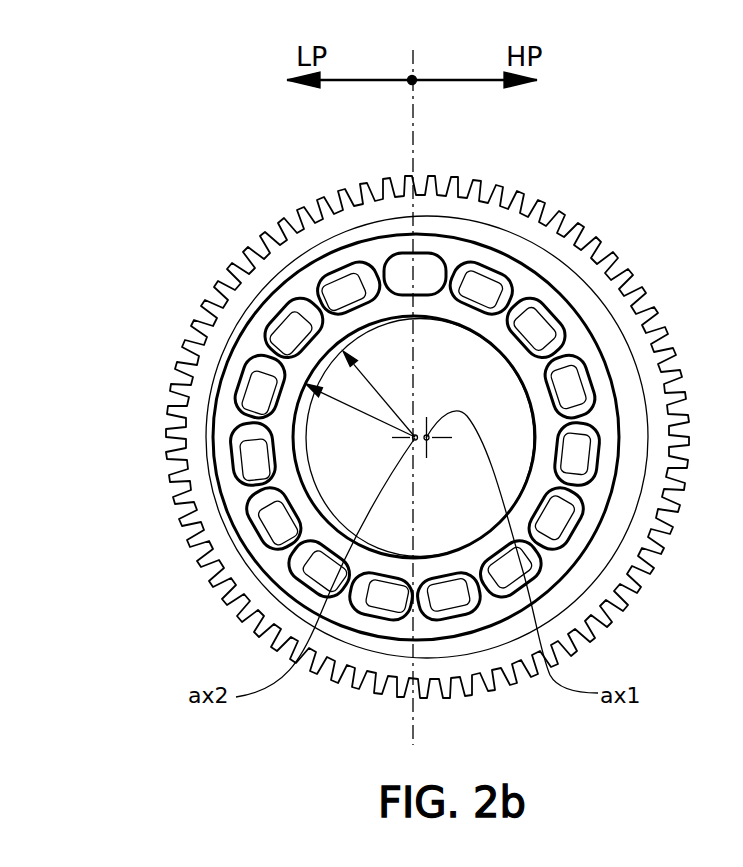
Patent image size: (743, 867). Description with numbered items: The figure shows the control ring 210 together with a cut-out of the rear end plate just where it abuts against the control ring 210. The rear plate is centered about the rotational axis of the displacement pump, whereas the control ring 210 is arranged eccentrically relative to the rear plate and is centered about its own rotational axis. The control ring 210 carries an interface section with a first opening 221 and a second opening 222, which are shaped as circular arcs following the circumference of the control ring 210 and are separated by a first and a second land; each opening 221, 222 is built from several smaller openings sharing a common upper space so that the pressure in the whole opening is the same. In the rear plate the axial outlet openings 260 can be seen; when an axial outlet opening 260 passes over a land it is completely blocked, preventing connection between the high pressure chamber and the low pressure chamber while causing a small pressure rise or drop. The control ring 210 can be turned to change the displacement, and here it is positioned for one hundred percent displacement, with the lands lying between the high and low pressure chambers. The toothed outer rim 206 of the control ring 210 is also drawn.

The gear teeth 206 is at (278, 222).
The control ring 210 is at (613, 192).
The first opening 221 is at (258, 384).
The second opening 222 is at (580, 389).
The axial outlet opening 260 is at (428, 271).